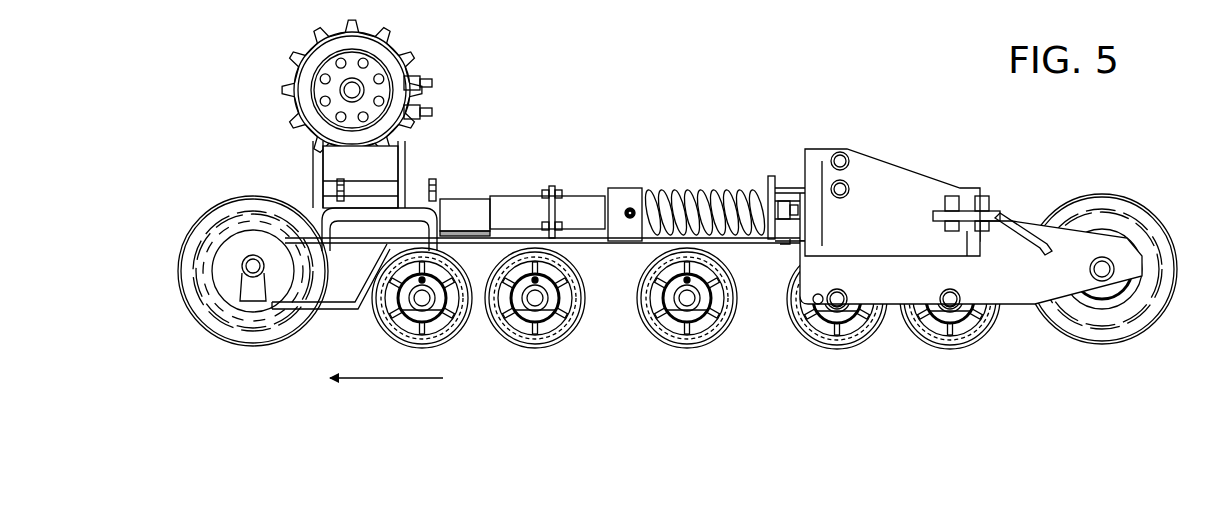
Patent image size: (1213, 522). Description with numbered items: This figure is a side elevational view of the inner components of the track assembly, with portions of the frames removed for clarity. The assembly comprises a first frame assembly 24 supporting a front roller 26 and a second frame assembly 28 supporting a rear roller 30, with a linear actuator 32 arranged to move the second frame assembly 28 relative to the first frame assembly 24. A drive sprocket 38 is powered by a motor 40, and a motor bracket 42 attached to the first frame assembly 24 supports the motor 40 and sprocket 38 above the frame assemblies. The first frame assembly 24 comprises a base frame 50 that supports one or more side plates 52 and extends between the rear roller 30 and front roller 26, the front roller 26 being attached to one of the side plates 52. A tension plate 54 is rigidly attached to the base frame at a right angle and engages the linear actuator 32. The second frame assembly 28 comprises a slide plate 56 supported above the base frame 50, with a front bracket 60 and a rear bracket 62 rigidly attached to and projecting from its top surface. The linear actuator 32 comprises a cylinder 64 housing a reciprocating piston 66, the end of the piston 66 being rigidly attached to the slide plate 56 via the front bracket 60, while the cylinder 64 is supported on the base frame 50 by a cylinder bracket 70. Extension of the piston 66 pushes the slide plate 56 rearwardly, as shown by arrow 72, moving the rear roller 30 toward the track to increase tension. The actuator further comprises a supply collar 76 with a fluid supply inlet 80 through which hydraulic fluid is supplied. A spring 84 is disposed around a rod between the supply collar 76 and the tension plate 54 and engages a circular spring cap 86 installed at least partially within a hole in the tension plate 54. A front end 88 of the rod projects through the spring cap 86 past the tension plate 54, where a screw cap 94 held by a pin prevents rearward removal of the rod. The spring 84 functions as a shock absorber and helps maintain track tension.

The first frame assembly 24 is at (790, 174).
The front roller 26 is at (1112, 200).
The second frame assembly 28 is at (434, 176).
The rear roller 30 is at (205, 218).
The linear actuator 32 is at (629, 130).
The drive sprocket 38 is at (298, 43).
The motor 40 is at (392, 78).
The motor bracket 42 is at (400, 170).
The base frame 50 is at (612, 243).
The side plates 52 is at (905, 178).
The tension plate 54 is at (770, 176).
The slide plate 56 is at (350, 236).
The front bracket 60 is at (436, 192).
The rear bracket 62 is at (338, 197).
The cylinder 64 is at (520, 200).
The piston 66 is at (462, 212).
The cylinder bracket 70 is at (553, 187).
The arrow 72 is at (398, 378).
The supply collar 76 is at (622, 190).
The fluid supply inlet 80 is at (628, 218).
The spring 84 is at (690, 190).
The spring cap 86 is at (774, 178).
The front end 88 is at (800, 207).
The screw cap 94 is at (785, 243).